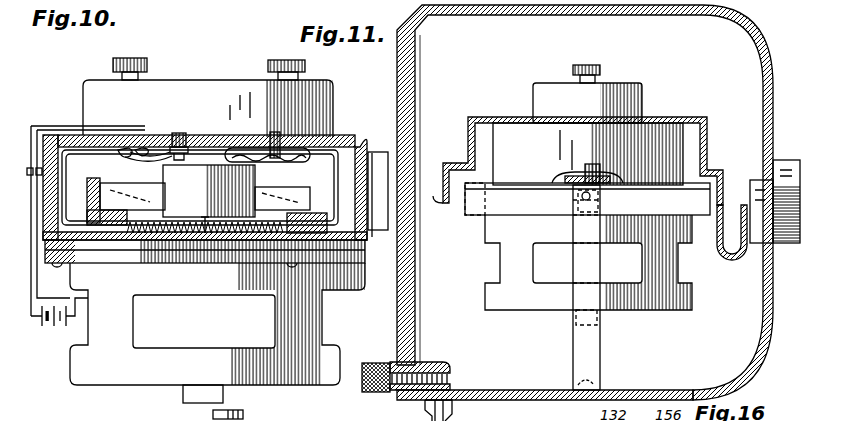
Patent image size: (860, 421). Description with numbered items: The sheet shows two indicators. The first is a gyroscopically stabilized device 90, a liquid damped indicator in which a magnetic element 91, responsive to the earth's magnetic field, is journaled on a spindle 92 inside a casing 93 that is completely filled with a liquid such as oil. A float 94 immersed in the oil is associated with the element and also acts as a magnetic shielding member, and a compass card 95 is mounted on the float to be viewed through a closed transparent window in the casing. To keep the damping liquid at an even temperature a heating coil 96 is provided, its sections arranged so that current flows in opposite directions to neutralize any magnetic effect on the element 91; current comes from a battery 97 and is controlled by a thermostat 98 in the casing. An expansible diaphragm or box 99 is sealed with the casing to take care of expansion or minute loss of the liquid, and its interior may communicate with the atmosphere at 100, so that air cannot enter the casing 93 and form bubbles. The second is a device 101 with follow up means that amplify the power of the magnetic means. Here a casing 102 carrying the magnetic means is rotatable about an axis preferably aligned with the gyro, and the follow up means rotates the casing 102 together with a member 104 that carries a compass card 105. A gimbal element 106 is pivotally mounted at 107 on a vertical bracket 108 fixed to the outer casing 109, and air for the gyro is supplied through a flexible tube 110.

In FIG. 10, the gyroscopically stabilized device 90 is at (61, 108).
In FIG. 10, the magnetic element 91 is at (137, 207).
In FIG. 10, the spindle 92 is at (178, 138).
In FIG. 10, the casing 93 is at (370, 158).
In FIG. 10, the float 94 is at (209, 191).
In FIG. 10, the compass card 95 is at (342, 188).
In FIG. 10, the heating coil 96 is at (182, 224).
In FIG. 10, the battery 97 is at (53, 325).
In FIG. 10, the thermostat 98 is at (122, 155).
In FIG. 10, the expansible diaphragm or box 99 is at (338, 139).
In FIG. 10, the atmospheric communication opening 100 is at (275, 132).
In FIG. 11, the device with follow up means 101 is at (735, 35).
In FIG. 11, the casing 102 is at (677, 120).
In FIG. 11, the member 104 is at (468, 128).
In FIG. 11, the compass card 105 is at (444, 207).
In FIG. 11, the gimbal element 106 is at (528, 205).
In FIG. 11, the pivot 107 is at (600, 200).
In FIG. 11, the vertical bracket 108 is at (572, 349).
In FIG. 11, the casing 109 is at (755, 352).
In FIG. 11, the flexible tube 110 is at (733, 258).